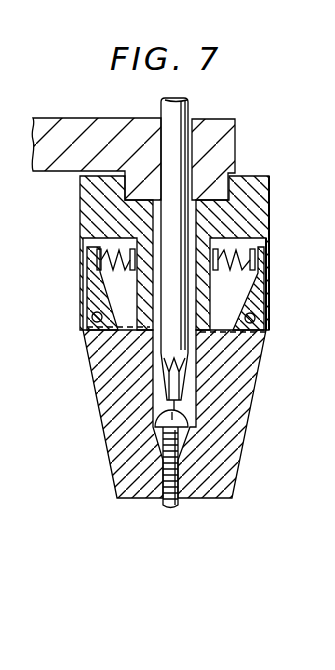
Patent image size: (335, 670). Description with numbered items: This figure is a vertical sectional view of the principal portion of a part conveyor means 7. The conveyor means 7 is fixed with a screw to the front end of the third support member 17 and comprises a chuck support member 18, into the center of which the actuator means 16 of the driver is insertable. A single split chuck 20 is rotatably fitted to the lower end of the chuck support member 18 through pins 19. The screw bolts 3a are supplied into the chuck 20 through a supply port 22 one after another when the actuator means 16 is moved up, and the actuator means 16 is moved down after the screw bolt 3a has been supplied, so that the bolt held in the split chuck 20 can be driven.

The conveyor means 7 is at (271, 204).
The actuator means 16 is at (192, 110).
The third support member 17 is at (76, 122).
The chuck support member 18 is at (85, 211).
The pins 19 is at (82, 312).
The single split chuck 20 is at (242, 434).
The supply port 22 is at (197, 360).
The screw bolt 3a is at (168, 508).